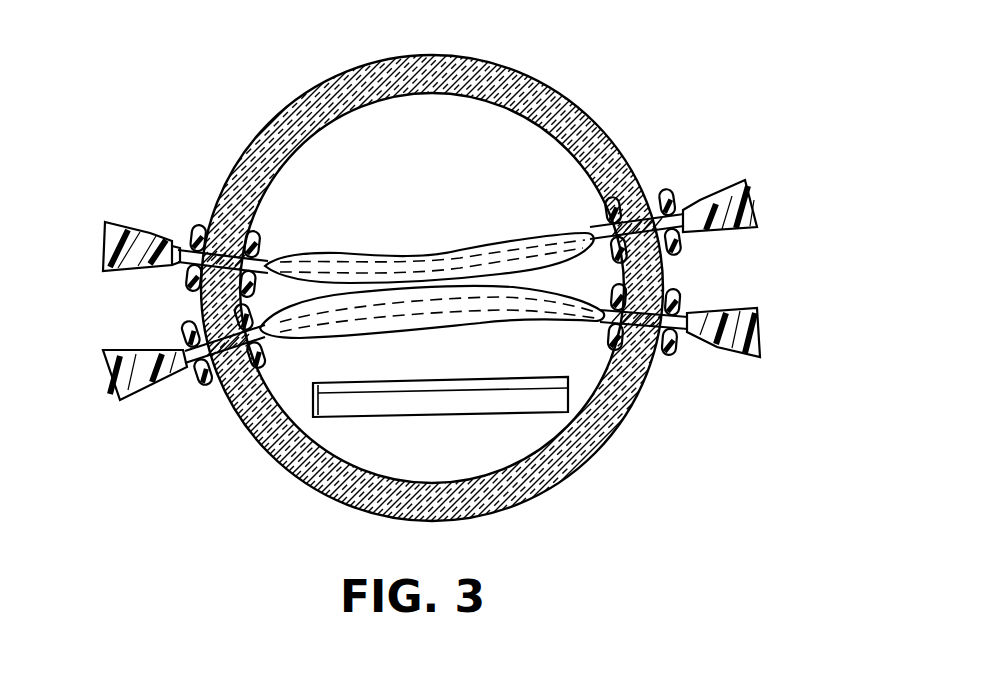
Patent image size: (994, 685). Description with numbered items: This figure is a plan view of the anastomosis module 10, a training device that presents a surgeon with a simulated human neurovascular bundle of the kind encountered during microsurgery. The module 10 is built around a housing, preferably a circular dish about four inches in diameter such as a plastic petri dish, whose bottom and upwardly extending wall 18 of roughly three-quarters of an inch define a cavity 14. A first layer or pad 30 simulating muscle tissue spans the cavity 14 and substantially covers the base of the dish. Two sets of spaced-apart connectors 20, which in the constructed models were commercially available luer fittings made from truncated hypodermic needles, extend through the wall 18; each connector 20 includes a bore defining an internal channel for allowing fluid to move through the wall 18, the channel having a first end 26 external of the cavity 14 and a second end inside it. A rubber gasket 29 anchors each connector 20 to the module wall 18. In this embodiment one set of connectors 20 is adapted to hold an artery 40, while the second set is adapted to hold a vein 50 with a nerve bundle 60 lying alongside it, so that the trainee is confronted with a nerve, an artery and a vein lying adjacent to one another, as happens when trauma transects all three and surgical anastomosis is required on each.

The module 10 is at (267, 448).
The cavity 14 is at (451, 110).
The wall 18 is at (283, 130).
The connector 20 is at (152, 351).
The first end 26 is at (99, 224).
The rubber gasket 29 is at (204, 221).
The first layer or pad 30 is at (414, 177).
The artery 40 is at (521, 256).
The vein 50 is at (371, 312).
The nerve bundle 60 is at (481, 399).